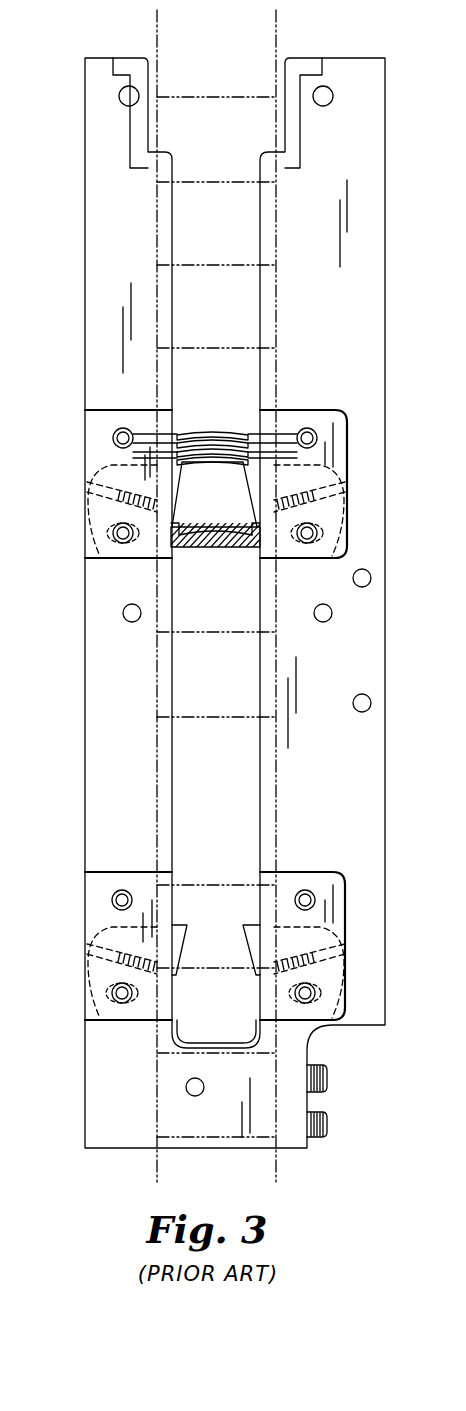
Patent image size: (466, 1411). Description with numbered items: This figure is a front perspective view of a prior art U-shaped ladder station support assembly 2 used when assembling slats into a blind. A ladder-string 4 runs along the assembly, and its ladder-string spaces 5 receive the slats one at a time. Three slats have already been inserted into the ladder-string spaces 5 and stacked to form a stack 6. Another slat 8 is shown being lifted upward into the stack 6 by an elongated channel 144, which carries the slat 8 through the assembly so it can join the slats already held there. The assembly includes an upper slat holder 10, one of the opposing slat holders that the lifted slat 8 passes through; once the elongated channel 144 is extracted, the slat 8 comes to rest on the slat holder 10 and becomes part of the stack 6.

The U-shaped ladder station support assembly 2 is at (108, 26).
The ladder-string 4 is at (153, 587).
The ladder-string spaces 5 is at (202, 682).
The stack 6 is at (213, 427).
The slat 8 is at (213, 535).
The left slat holder 10 is at (275, 603).
The elongated channel 144 is at (237, 548).